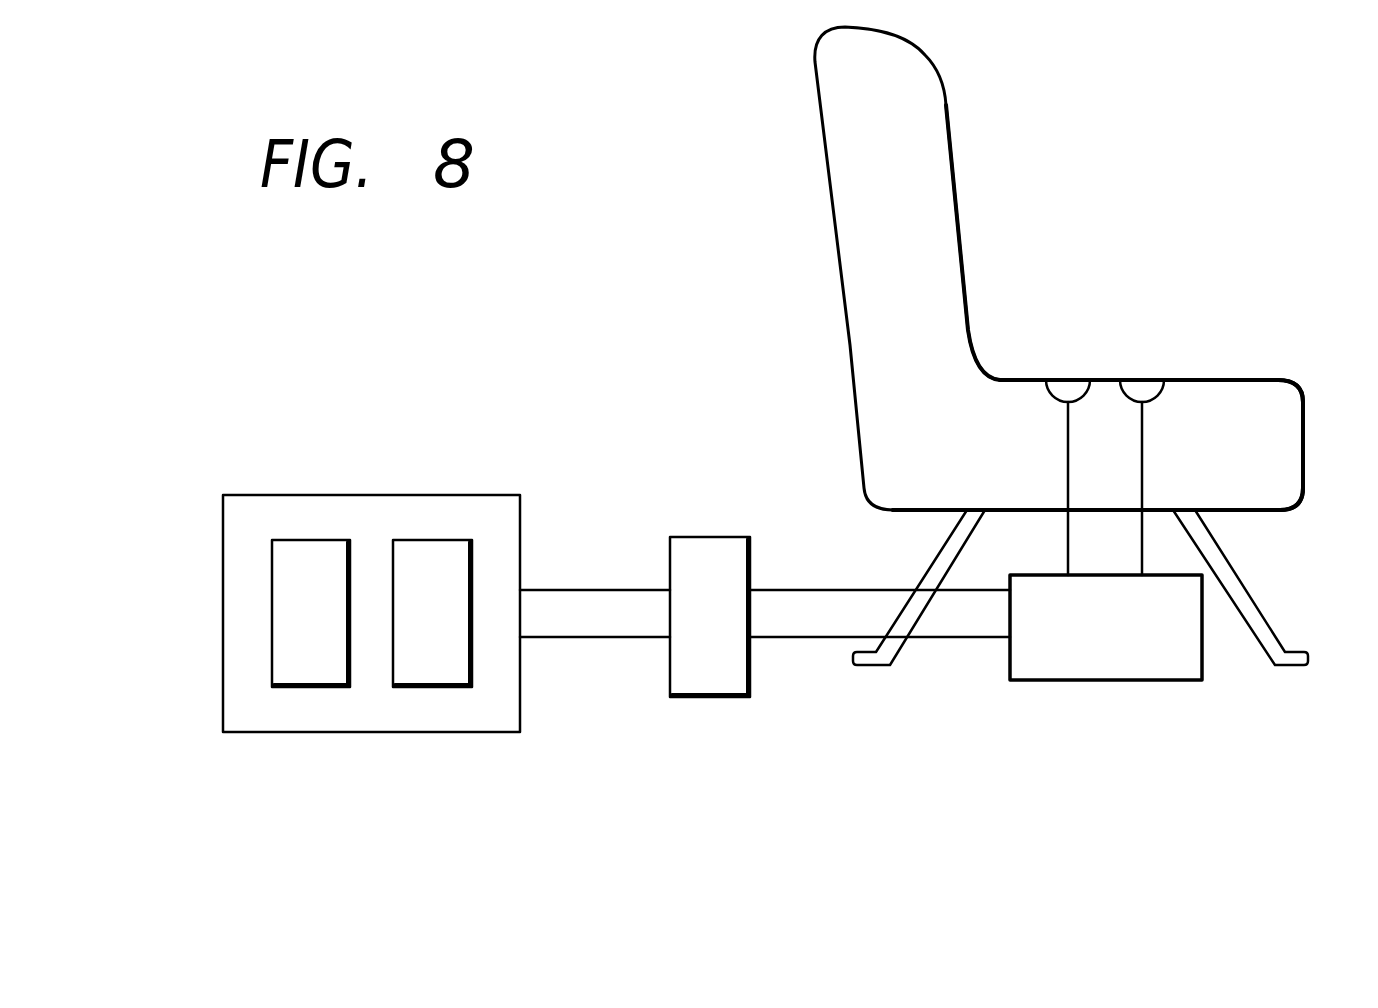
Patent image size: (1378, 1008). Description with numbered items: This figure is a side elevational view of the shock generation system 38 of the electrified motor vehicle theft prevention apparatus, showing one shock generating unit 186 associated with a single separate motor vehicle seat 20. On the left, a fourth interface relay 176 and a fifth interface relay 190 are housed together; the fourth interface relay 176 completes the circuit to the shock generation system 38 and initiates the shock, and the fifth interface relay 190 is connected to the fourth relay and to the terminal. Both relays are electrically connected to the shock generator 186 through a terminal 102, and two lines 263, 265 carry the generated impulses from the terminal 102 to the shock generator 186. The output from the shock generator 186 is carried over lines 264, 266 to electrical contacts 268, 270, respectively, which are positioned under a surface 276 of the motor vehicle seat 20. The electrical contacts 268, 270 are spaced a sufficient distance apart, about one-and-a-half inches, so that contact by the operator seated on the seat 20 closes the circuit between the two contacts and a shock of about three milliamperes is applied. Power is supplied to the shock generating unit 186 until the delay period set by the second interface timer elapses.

The motor vehicle seat 20 is at (1296, 470).
The shock generation system 38 is at (417, 625).
The terminal 102 is at (670, 553).
The fourth interface relay 176 is at (473, 548).
The shock generator unit 186 is at (1148, 680).
The fifth interface relay 190 is at (340, 687).
The line 263 is at (873, 588).
The line 264 is at (1068, 480).
The line 265 is at (973, 637).
The line 266 is at (1142, 427).
The electrical contact 268 is at (1083, 380).
The electrical contact 270 is at (1158, 380).
The surface 276 is at (1267, 380).